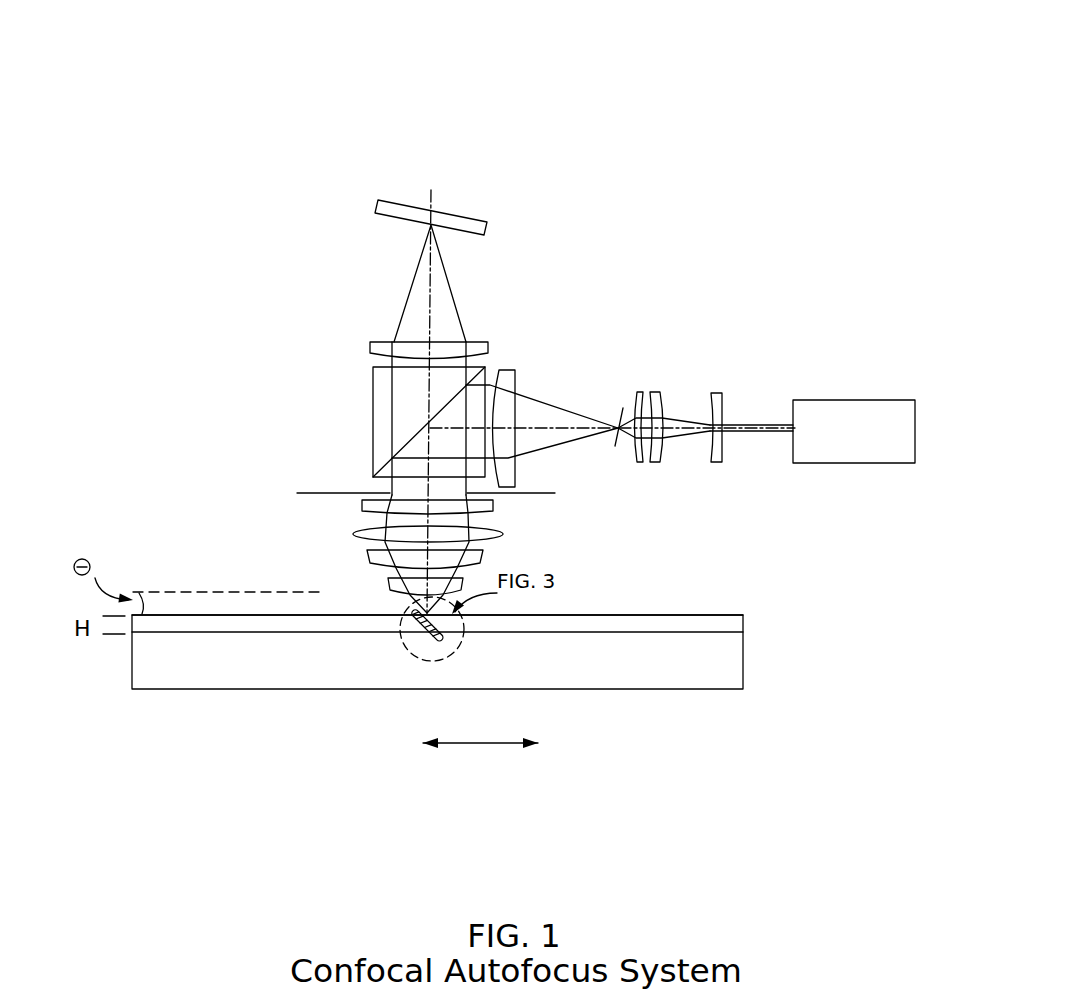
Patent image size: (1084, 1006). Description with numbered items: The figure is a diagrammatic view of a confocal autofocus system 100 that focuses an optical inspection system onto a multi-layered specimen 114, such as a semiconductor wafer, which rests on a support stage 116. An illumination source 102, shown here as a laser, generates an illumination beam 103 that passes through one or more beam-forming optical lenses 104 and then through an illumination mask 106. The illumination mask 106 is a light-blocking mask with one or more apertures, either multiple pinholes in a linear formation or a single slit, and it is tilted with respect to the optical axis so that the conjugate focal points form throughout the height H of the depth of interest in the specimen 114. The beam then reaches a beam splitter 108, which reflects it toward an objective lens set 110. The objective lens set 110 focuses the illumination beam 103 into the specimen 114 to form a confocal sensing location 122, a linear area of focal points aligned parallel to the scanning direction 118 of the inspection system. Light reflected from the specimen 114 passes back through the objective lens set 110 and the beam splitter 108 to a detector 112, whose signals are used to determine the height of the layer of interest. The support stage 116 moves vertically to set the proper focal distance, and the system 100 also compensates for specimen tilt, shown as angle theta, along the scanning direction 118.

The confocal autofocus system 100 is at (645, 62).
The illumination source 102 is at (858, 400).
The illumination beam 103 is at (744, 425).
The beam-forming optical lenses 104 is at (718, 477).
The illumination mask 106 is at (622, 400).
The beam splitter 108 is at (373, 403).
The objective lens set 110 is at (353, 498).
The detector 112 is at (484, 216).
The specimen 114 is at (745, 622).
The support stage 116 is at (745, 662).
The scanning direction 118 is at (490, 745).
The confocal sensing location 122 is at (423, 634).